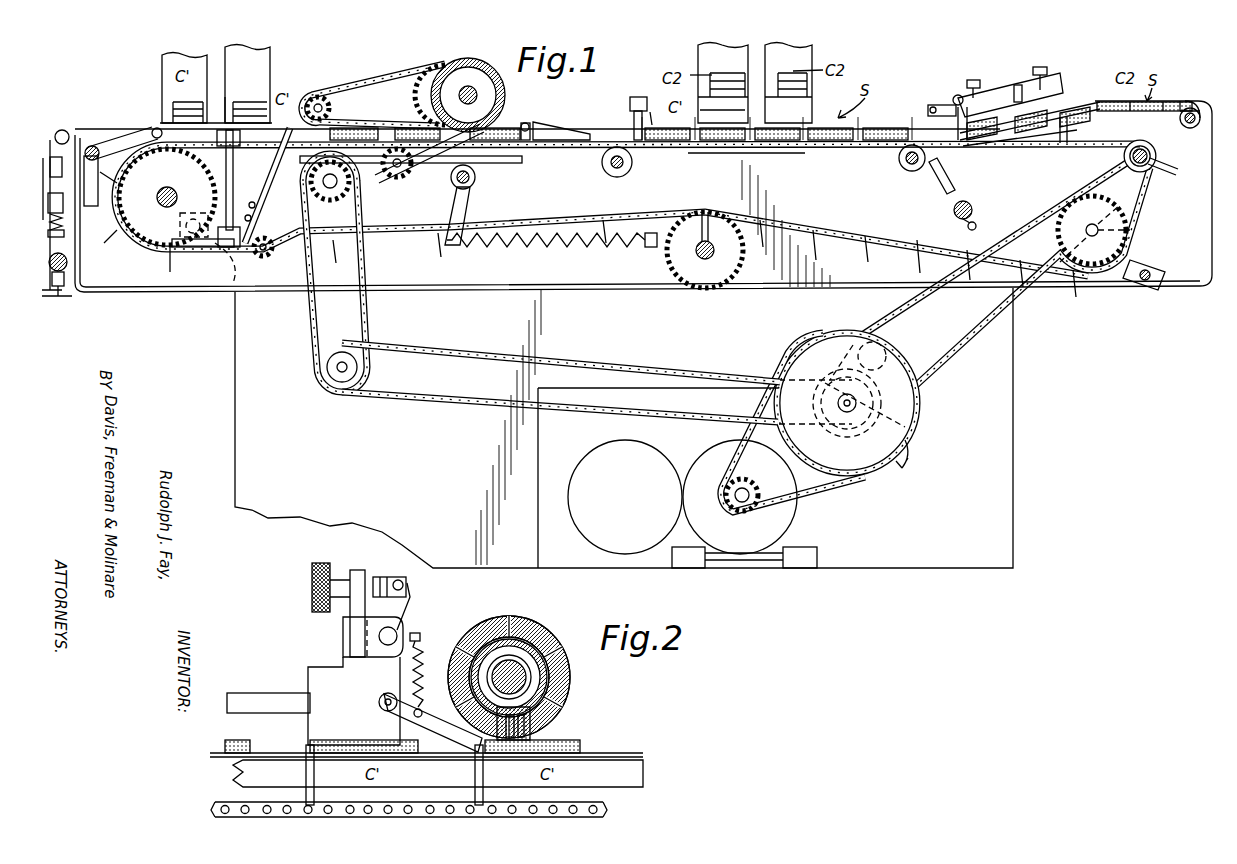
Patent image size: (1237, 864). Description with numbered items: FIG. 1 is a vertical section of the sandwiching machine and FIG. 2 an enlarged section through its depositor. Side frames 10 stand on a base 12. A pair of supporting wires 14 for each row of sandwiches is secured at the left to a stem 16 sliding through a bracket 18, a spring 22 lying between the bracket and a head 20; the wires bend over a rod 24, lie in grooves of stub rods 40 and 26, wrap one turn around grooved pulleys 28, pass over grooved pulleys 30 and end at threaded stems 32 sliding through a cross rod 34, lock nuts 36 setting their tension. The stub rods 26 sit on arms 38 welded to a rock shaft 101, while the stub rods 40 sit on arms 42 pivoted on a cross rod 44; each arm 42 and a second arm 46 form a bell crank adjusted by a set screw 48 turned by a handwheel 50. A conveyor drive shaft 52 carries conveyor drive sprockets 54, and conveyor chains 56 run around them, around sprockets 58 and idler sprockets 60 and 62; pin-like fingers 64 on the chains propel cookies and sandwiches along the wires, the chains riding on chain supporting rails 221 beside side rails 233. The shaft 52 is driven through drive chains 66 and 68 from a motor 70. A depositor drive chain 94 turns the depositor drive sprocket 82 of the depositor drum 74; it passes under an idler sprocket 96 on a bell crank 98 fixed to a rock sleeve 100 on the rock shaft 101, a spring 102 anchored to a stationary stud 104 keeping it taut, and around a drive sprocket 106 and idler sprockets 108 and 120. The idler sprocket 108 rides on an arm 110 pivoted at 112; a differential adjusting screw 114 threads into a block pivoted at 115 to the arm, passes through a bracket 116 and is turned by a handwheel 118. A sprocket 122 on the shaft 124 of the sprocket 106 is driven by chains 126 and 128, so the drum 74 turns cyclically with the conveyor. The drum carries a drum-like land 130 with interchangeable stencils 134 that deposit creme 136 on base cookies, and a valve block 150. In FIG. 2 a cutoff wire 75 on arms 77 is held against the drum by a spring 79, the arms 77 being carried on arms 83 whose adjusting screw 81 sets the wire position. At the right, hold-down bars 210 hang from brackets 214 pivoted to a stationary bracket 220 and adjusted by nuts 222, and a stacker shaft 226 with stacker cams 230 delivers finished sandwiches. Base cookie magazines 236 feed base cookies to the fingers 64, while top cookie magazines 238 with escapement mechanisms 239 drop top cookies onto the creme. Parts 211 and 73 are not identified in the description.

In FIG. 1, the side frames 10 is at (127, 290).
In FIG. 1, the base 12 is at (992, 457).
In FIG. 1, the supporting wires 14 is at (82, 138).
In FIG. 2, the supporting wires 14 is at (622, 754).
In FIG. 1, the stem 16 is at (48, 156).
In FIG. 1, the bracket 18 is at (64, 192).
In FIG. 1, the head 20 is at (66, 238).
In FIG. 1, the spring 22 is at (66, 228).
In FIG. 1, the rod 24 is at (63, 130).
In FIG. 1, the stub rods 26 is at (529, 122).
In FIG. 1, the grooved pulleys 28 is at (617, 177).
In FIG. 1, the grooved pulleys 30 is at (905, 165).
In FIG. 1, the threaded stems 32 is at (957, 183).
In FIG. 1, the cross rod 34 is at (972, 206).
In FIG. 1, the lock nuts 36 is at (964, 225).
In FIG. 1, the arms 38 is at (508, 165).
In FIG. 1, the stub rods 40 is at (163, 135).
In FIG. 1, the arms 42 is at (114, 144).
In FIG. 1, the cross rod 44 is at (93, 146).
In FIG. 1, the second arm 46 is at (90, 208).
In FIG. 1, the set screw 48 is at (157, 197).
In FIG. 1, the handwheel 50 is at (54, 260).
In FIG. 1, the conveyor drive shaft 52 is at (1153, 168).
In FIG. 1, the conveyor drive sprockets 54 is at (1130, 170).
In FIG. 1, the conveyor chains 56 is at (540, 150).
In FIG. 2, the conveyor chains 56 is at (557, 818).
In FIG. 1, the sprockets 58 is at (217, 197).
In FIG. 1, the idler sprocket 60 is at (1056, 238).
In FIG. 1, the idler sprocket 62 is at (745, 264).
In FIG. 1, the pin-like fingers 64 is at (116, 247).
In FIG. 1, the drive chain 66 is at (983, 320).
In FIG. 1, the drive chain 68 is at (833, 490).
In FIG. 1, the electric motor 70 is at (790, 517).
In FIG. 1, the depositor drum 74 is at (498, 93).
In FIG. 1, the depositor drive sprocket 82 is at (438, 100).
In FIG. 1, the depositor drive chain 94 is at (382, 78).
In FIG. 1, the idler sprocket 96 is at (390, 177).
In FIG. 1, the bell crank 98 is at (452, 200).
In FIG. 1, the rock sleeve 100 is at (471, 186).
In FIG. 1, the rock shaft 101 is at (475, 180).
In FIG. 1, the spring 102 is at (580, 248).
In FIG. 1, the stationary stud 104 is at (653, 248).
In FIG. 1, the drive sprocket 106 is at (355, 215).
In FIG. 1, the idler sprocket 108 is at (259, 257).
In FIG. 1, the arm 110 is at (196, 250).
In FIG. 1, the pivot 112 is at (178, 229).
In FIG. 1, the differential adjusting screw 114 is at (233, 170).
In FIG. 1, the pivot 115 is at (228, 280).
In FIG. 1, the bracket 116 is at (240, 137).
In FIG. 1, the handwheel 118 is at (226, 100).
In FIG. 1, the idler sprocket 120 is at (343, 108).
In FIG. 1, the sprocket 122 is at (251, 218).
In FIG. 1, the shaft 124 is at (255, 205).
In FIG. 1, the chain 126 is at (362, 320).
In FIG. 1, the chain 128 is at (490, 395).
In FIG. 2, the drum-like land 130 is at (505, 620).
In FIG. 2, the interchangeable stencils 134 is at (547, 642).
In FIG. 1, the creme 136 is at (651, 126).
In FIG. 2, the creme 136 is at (560, 744).
In FIG. 2, the valve block 150 is at (512, 684).
In FIG. 1, the hold-down bars 210 is at (1064, 106).
In FIG. 1, the lower rail 211 is at (1070, 134).
In FIG. 1, the brackets 214 is at (995, 90).
In FIG. 1, the stationary bracket 220 is at (938, 100).
In FIG. 1, the chain supporting rails 221 is at (802, 155).
In FIG. 1, the adjusting nuts 222 is at (979, 79).
In FIG. 1, the stacker shaft 226 is at (1197, 130).
In FIG. 1, the stacker cams 230 is at (1181, 94).
In FIG. 1, the side rails 233 is at (631, 125).
In FIG. 2, the side rails 233 is at (605, 771).
In FIG. 1, the base cookie magazines 236 is at (162, 66).
In FIG. 1, the top cookie magazines 238 is at (698, 58).
In FIG. 1, the escapement mechanisms 239 is at (740, 113).
In FIG. 2, the slot 73 is at (510, 742).
In FIG. 2, the cutoff wire 75 is at (533, 736).
In FIG. 2, the arms 77 is at (428, 726).
In FIG. 2, the spring 79 is at (425, 668).
In FIG. 2, the adjusting screw 81 is at (374, 578).
In FIG. 2, the arms 83 is at (410, 605).